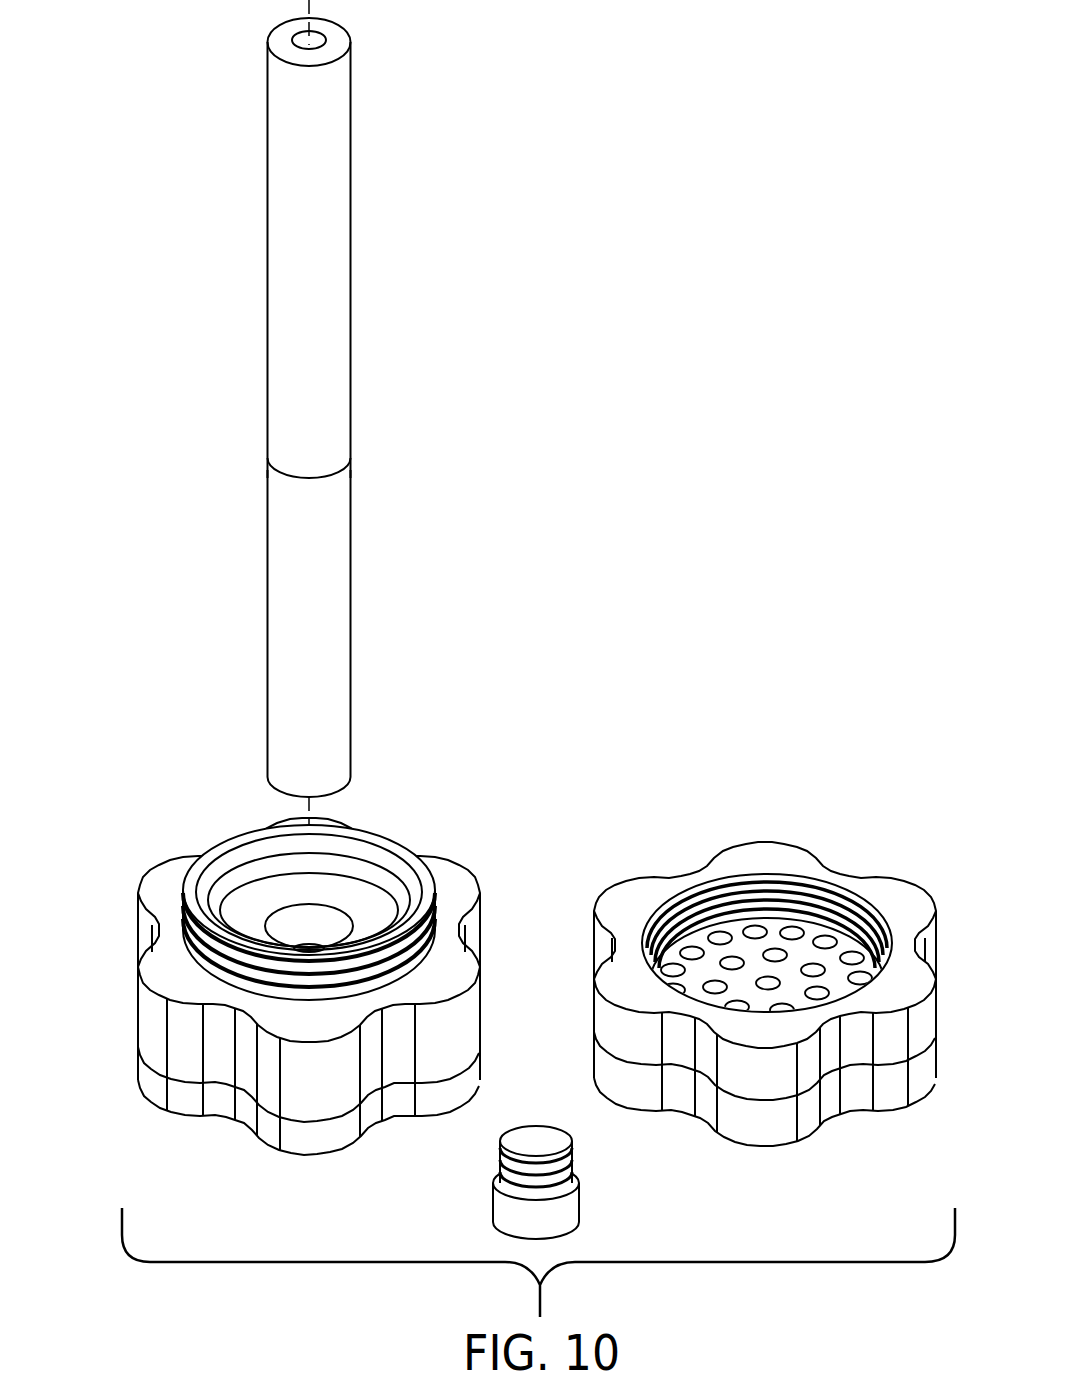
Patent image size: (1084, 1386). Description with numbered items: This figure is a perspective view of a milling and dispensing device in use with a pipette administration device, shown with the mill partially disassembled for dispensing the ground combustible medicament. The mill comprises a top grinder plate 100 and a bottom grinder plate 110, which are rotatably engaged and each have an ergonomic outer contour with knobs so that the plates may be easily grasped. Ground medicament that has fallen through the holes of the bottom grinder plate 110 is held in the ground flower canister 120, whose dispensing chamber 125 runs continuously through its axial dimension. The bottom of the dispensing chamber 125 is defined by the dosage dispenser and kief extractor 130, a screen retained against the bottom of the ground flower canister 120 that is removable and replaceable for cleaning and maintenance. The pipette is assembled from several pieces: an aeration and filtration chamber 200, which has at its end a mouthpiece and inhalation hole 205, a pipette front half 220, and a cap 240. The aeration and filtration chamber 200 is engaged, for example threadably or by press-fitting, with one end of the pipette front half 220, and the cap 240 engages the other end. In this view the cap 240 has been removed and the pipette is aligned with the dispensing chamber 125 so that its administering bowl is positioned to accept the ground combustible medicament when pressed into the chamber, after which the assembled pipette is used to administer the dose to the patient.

The top grinder plate 100 is at (763, 1132).
The bottom grinder plate 110 is at (762, 855).
The ground flower canister 120 is at (173, 898).
The dispensing chamber 125 is at (327, 932).
The dosage dispenser and kief extractor 130 is at (170, 1058).
The aeration and filtration chamber 200 is at (327, 285).
The inhalation hole 205 is at (318, 40).
The pipette front half 220 is at (327, 636).
The cap 240 is at (502, 1208).